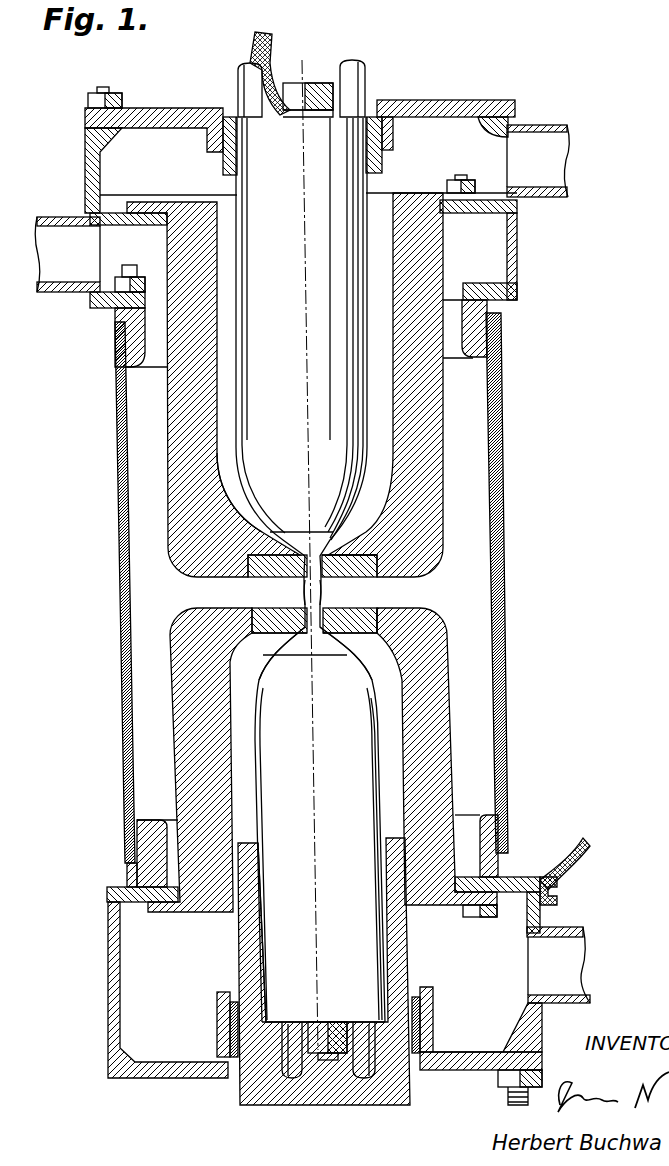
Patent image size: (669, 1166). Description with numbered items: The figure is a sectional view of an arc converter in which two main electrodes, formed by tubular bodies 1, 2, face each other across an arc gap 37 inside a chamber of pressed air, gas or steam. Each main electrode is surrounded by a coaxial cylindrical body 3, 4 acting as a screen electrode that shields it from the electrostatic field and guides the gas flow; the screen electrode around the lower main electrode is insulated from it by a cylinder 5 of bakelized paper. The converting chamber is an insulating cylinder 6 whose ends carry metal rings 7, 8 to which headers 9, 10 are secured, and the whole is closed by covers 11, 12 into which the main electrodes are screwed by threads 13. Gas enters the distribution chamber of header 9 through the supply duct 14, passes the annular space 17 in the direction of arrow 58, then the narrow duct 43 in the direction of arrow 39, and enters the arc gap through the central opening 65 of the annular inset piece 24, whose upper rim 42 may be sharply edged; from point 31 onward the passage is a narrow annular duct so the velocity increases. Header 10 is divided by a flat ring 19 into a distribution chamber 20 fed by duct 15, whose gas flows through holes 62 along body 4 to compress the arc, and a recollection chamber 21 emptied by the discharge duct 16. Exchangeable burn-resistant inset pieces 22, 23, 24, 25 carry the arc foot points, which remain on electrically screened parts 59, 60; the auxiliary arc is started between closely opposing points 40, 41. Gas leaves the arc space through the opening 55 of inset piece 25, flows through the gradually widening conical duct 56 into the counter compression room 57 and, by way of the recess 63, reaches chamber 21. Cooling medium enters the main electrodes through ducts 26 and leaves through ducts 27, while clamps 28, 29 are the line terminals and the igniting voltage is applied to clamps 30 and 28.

The tubular body 1 is at (367, 703).
The tubular body 2 is at (343, 481).
The coaxial cylindrical body 3 is at (440, 723).
The coaxial cylindrical body 4 is at (422, 423).
The cylinder of bakelized paper 5 is at (247, 977).
The cylinder 6 is at (502, 562).
The metal ring 7 is at (490, 842).
The metal ring 8 is at (478, 313).
The header 9 is at (542, 1030).
The header 10 is at (515, 247).
The cover 11 is at (527, 1065).
The cover 12 is at (487, 107).
The threads 13 is at (405, 100).
The supply duct 14 is at (573, 947).
The duct 15 is at (50, 248).
The discharge duct 16 is at (562, 150).
The annular space 17 is at (232, 912).
The flat ring 19 is at (482, 208).
The distribution chamber 20 is at (495, 270).
The recollection chamber 21 is at (487, 145).
The inset piece 22 is at (318, 643).
The inset piece 23 is at (373, 618).
The inset piece 24 is at (383, 615).
The inset piece 25 is at (375, 560).
The duct 26 is at (250, 80).
The duct 27 is at (353, 80).
The clamp 28 is at (332, 1047).
The clamp 29 is at (297, 90).
The clamp 30 is at (557, 902).
The point 31 is at (333, 647).
The arc gap 37 is at (314, 594).
The arrow 39 is at (270, 645).
The point 40 is at (333, 633).
The point 41 is at (318, 618).
The upper rim 42 is at (320, 617).
The duct 43 is at (297, 612).
The opening 55 is at (368, 560).
The conical duct 56 is at (250, 507).
The counter compression room 57 is at (227, 392).
The arrow 58 is at (236, 892).
The electrically screened electrode part 59 is at (305, 570).
The electrically screened electrode part 60 is at (300, 615).
The holes 62 is at (115, 322).
The recess 63 is at (223, 213).
The central opening 65 is at (360, 620).